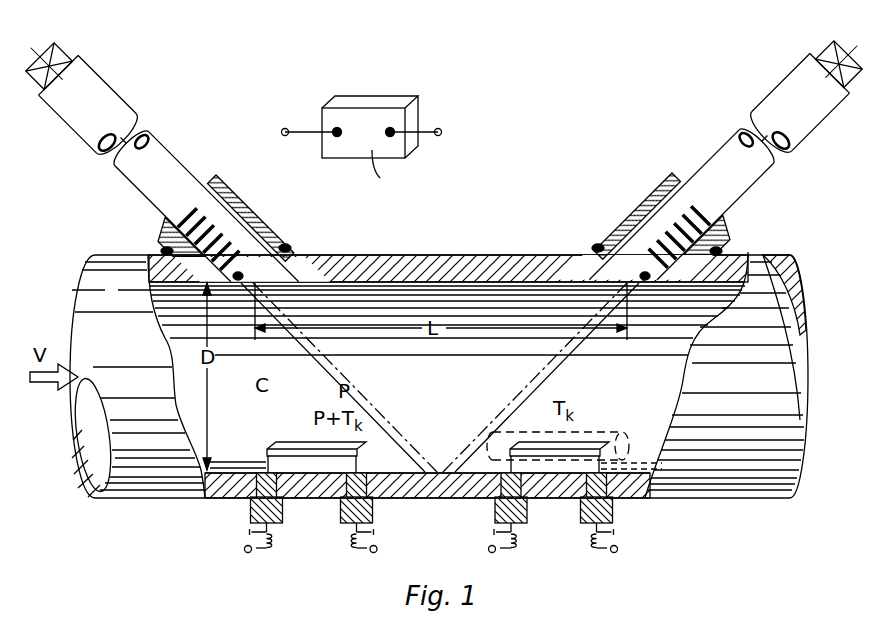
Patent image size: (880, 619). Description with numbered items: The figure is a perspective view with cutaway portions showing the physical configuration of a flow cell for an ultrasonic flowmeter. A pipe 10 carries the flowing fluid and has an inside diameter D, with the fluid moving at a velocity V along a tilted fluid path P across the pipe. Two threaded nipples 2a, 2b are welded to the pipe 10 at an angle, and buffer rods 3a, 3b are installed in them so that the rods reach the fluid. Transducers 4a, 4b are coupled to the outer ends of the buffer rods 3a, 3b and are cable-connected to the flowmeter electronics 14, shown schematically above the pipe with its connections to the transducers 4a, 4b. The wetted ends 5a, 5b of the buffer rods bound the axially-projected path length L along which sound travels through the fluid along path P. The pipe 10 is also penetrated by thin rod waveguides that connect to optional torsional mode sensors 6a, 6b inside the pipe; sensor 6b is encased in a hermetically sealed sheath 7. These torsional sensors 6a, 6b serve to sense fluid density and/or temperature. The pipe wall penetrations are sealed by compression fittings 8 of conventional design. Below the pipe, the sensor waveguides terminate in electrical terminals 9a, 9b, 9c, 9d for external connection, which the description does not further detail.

The threaded nipple 2a is at (238, 212).
The threaded nipple 2b is at (650, 212).
The buffer rod 3a is at (178, 168).
The buffer rod 3b is at (715, 167).
The transducer 4a is at (62, 52).
The transducer 4b is at (822, 48).
The wetted end of buffer rod 5a is at (248, 244).
The wetted end of buffer rod 5b is at (633, 244).
The torsional mode sensor 6a is at (266, 457).
The torsional mode sensor 6b is at (626, 452).
The hermetically sealed sheath 7 is at (595, 432).
The compression fitting 8 is at (289, 247).
The electrical terminal 9a is at (244, 551).
The electrical terminal 9b is at (378, 551).
The electrical terminal 9c is at (488, 551).
The electrical terminal 9d is at (619, 551).
The pipe 10 is at (117, 256).
The flowmeter electronics 14 is at (377, 100).